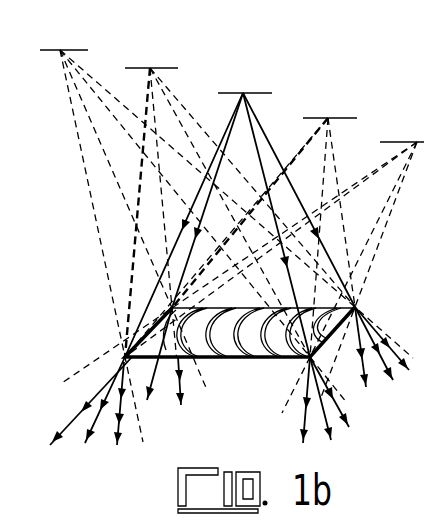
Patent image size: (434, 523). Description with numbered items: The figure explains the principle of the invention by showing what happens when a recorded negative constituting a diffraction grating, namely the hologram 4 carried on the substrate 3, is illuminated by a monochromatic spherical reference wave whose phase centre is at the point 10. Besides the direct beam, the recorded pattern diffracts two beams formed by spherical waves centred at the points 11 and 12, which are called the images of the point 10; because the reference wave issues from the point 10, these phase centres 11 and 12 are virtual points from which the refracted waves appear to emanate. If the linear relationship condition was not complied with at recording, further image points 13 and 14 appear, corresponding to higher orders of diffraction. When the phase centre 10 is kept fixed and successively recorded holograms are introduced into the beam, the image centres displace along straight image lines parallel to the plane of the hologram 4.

The phase centre of the reference wave 10 is at (243, 93).
The image point 11 is at (328, 118).
The image point 12 is at (151, 67).
The image point of higher diffraction order 13 is at (417, 142).
The image point of higher diffraction order 14 is at (62, 49).
The substrate 3 is at (338, 336).
The hologram 4 is at (265, 360).